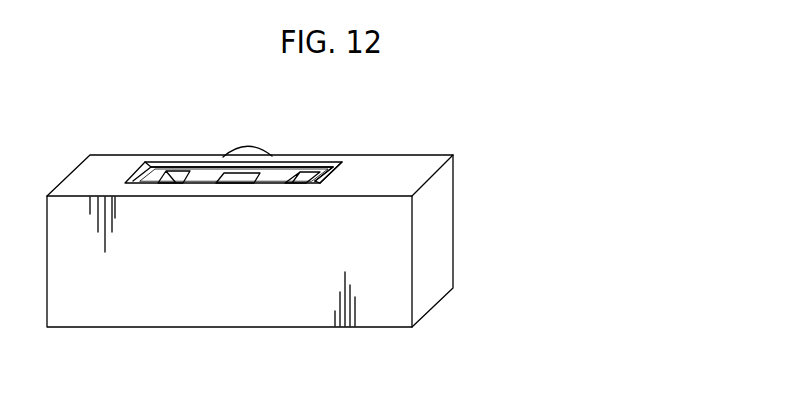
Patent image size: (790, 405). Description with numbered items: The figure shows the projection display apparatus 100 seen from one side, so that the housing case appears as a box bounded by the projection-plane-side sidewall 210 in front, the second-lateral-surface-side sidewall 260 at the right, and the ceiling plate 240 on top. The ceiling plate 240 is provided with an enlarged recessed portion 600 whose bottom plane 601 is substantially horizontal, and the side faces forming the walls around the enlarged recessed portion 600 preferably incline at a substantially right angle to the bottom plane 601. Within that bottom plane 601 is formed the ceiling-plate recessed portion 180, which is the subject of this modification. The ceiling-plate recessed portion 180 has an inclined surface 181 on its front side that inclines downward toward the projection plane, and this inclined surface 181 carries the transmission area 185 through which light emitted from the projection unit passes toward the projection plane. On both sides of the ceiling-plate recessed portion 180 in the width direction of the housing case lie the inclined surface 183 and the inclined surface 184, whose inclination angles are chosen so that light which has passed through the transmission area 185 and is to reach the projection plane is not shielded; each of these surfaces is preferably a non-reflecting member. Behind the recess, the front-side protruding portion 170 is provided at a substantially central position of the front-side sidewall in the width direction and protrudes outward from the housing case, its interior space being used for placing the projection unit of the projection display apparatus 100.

The projection display apparatus 100 is at (329, 221).
The front-side protruding portion 170 is at (257, 150).
The ceiling-plate recessed portion 180 is at (200, 177).
The inclined surface 181 is at (283, 160).
The inclined surface 183 is at (170, 176).
The inclined surface 184 is at (292, 179).
The transmission area 185 is at (237, 176).
The projection-plane-side sidewall 210 is at (240, 313).
The ceiling plate 240 is at (412, 162).
The second-lateral-surface-side sidewall 260 is at (438, 236).
The enlarged recessed portion 600 is at (141, 171).
The bottom plane 601 is at (327, 173).